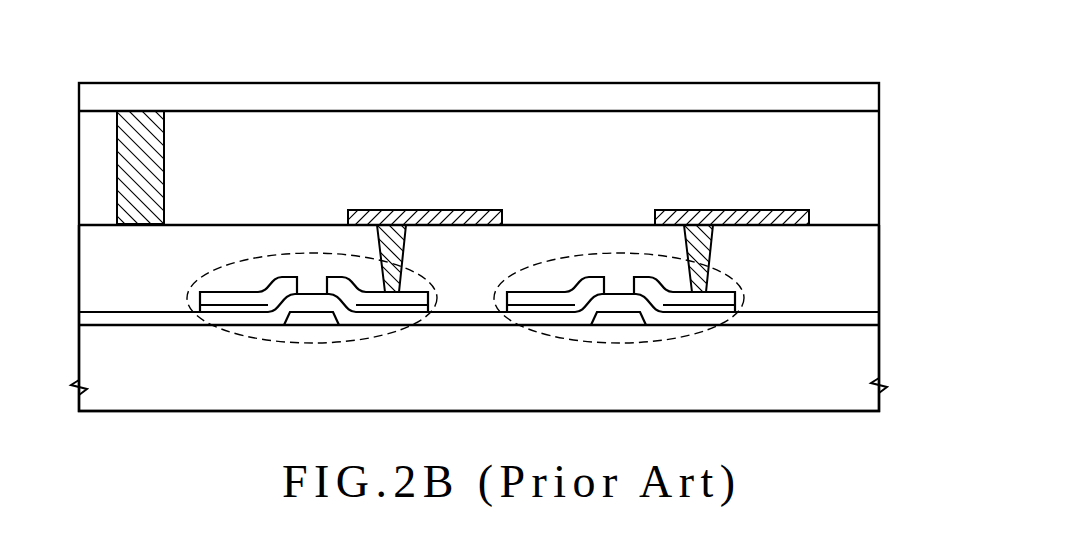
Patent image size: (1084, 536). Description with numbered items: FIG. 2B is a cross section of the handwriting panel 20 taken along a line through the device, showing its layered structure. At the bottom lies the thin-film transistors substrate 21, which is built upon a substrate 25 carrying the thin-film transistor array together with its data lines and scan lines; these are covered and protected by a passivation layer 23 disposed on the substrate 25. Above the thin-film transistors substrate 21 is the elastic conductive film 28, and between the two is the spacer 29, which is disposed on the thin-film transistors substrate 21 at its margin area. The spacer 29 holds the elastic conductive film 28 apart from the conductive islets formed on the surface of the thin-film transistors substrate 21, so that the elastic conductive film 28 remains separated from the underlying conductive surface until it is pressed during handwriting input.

The handwriting panel 20 is at (799, 72).
The thin-film transistors substrate 21 is at (893, 230).
The passivation layer 23 is at (154, 279).
The substrate 25 is at (154, 379).
The elastic conductive film 28 is at (572, 83).
The spacer 29 is at (154, 185).